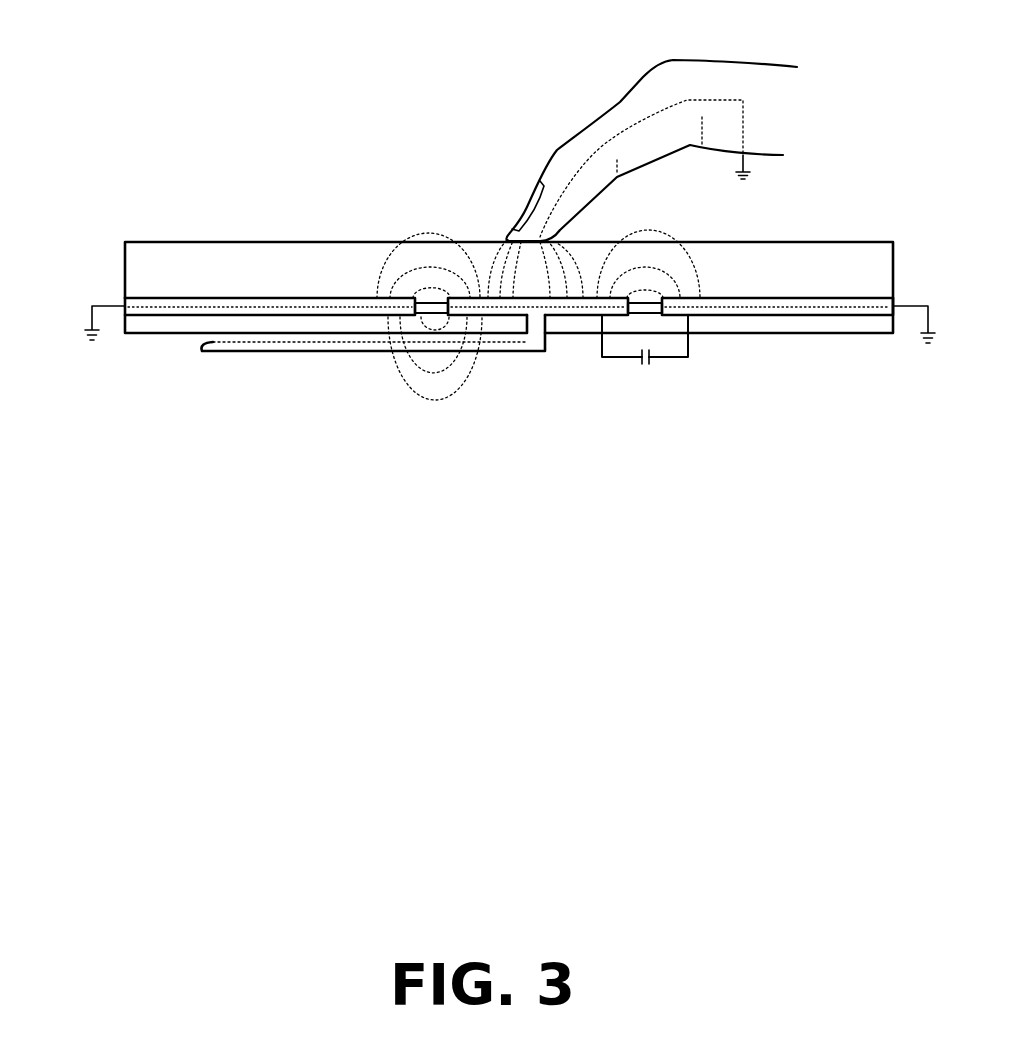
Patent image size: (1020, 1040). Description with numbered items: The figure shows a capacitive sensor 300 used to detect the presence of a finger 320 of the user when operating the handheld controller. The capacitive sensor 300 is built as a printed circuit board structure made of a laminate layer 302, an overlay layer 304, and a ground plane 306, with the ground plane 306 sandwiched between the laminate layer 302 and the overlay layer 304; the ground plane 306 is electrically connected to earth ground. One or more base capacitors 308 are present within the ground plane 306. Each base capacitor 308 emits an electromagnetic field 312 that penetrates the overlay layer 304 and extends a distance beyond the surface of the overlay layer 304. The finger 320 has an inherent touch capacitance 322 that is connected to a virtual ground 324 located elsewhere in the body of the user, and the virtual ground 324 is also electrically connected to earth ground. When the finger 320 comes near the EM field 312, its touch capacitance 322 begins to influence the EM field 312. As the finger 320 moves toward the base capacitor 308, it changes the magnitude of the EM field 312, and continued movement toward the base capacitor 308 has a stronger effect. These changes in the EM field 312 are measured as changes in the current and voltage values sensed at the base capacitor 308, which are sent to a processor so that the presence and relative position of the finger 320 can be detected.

The capacitive sensor 300 is at (318, 113).
The laminate layer 302 is at (167, 337).
The overlay layer 304 is at (858, 243).
The ground plane 306 is at (82, 338).
The base capacitor 308 is at (430, 305).
The electromagnetic (EM) field 312 is at (428, 232).
The finger 320 is at (742, 67).
The touch capacitance 322 is at (643, 137).
The virtual ground 324 is at (753, 177).